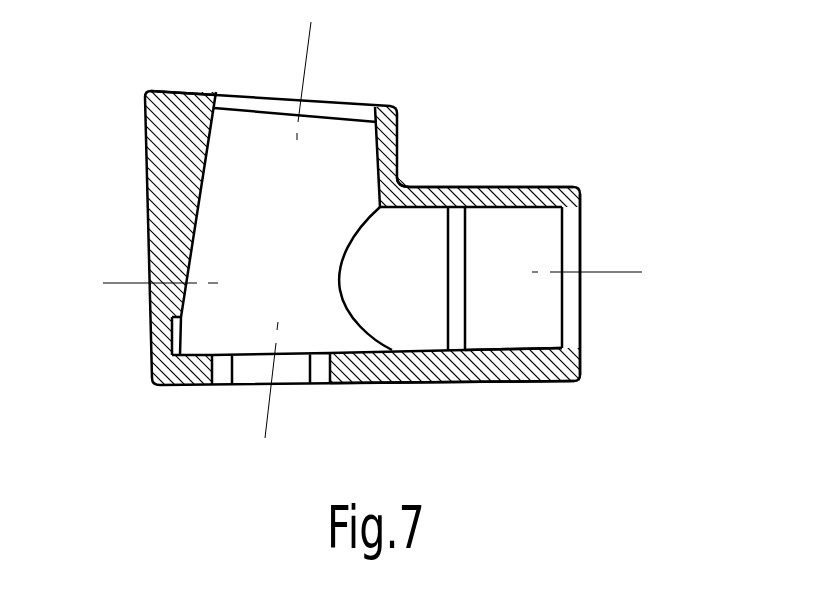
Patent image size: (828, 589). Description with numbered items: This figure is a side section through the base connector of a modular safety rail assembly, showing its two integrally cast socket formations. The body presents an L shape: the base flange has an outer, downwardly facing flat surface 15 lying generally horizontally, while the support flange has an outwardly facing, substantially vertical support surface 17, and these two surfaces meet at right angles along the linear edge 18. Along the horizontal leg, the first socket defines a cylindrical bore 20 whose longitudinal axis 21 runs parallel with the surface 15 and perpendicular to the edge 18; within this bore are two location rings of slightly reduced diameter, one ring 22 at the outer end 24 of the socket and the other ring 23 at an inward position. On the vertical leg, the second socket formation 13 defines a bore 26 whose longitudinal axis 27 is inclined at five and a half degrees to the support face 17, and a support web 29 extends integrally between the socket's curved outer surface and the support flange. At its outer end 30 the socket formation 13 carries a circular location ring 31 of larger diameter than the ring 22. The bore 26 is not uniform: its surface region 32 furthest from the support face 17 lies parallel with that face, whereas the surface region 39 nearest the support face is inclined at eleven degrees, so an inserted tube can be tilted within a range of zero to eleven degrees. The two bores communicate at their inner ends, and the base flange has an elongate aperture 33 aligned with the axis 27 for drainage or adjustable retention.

The socket formation 13 is at (395, 152).
The outer flat surface 15 is at (422, 382).
The support surface 17 is at (147, 253).
The edge 18 is at (156, 386).
The cylindrical bore 20 is at (520, 327).
The longitudinal axis 21 is at (627, 272).
The location ring 22 is at (567, 227).
The location ring 23 is at (457, 308).
The outer end 24 is at (587, 308).
The bore 26 is at (228, 170).
The longitudinal axis 27 is at (272, 403).
The support web 29 is at (168, 100).
The outer end 30 is at (385, 107).
The circular location ring 31 is at (327, 107).
The surface region 32 is at (378, 167).
The aperture 33 is at (245, 372).
The surface region 39 is at (197, 220).